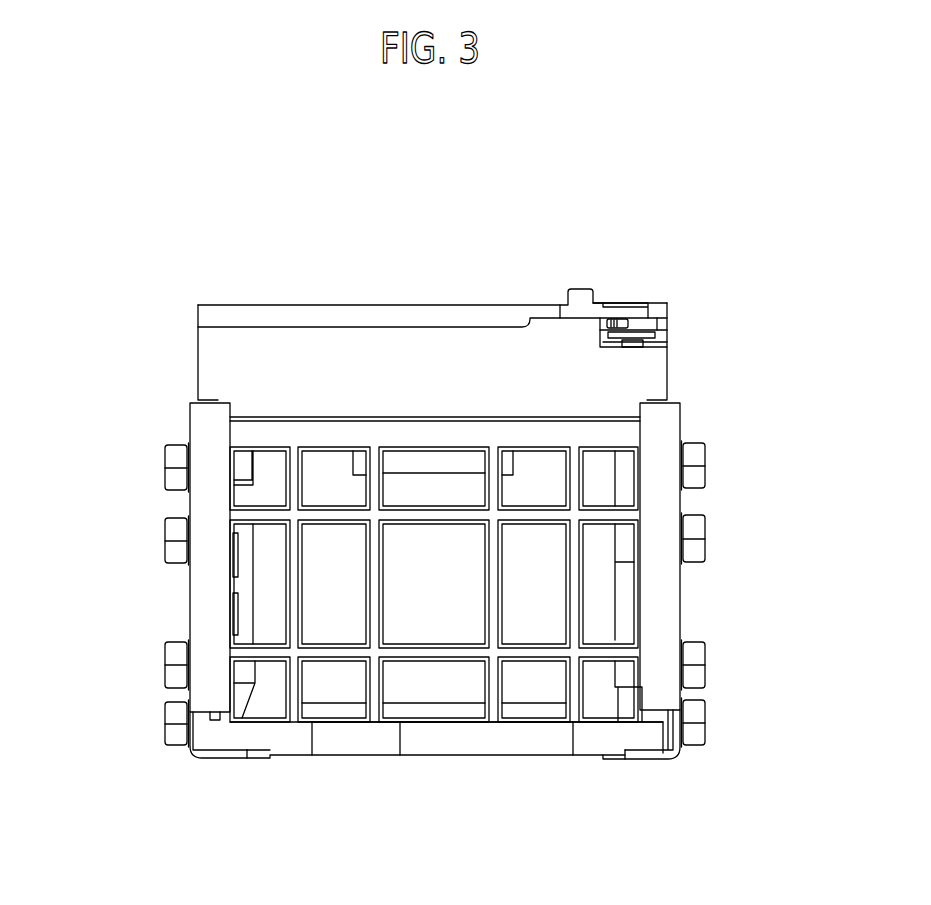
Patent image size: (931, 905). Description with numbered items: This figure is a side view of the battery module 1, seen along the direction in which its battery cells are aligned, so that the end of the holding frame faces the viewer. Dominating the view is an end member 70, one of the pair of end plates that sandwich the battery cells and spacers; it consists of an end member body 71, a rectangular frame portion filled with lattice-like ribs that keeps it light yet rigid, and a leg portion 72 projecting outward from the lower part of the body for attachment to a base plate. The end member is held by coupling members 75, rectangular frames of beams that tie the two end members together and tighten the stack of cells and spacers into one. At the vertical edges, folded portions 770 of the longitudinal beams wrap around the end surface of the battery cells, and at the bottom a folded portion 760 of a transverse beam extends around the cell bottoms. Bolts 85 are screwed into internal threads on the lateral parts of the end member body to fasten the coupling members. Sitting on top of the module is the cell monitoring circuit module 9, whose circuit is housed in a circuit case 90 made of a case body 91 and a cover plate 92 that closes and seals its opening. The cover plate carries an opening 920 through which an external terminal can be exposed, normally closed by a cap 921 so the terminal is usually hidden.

The battery module 1 is at (737, 198).
The cell monitoring circuit module 9 is at (470, 275).
The circuit case 90 is at (343, 216).
The case body 91 is at (368, 373).
The cover plate 92 is at (423, 318).
The opening 920 is at (677, 323).
The cap 921 is at (634, 306).
The folded portion 770 is at (212, 427).
The bolt 85 is at (173, 533).
The coupling member 75 is at (178, 610).
The end member 70 is at (433, 765).
The end member body 71 is at (505, 737).
The leg portion 72 is at (350, 740).
The folded portion 760 is at (228, 756).